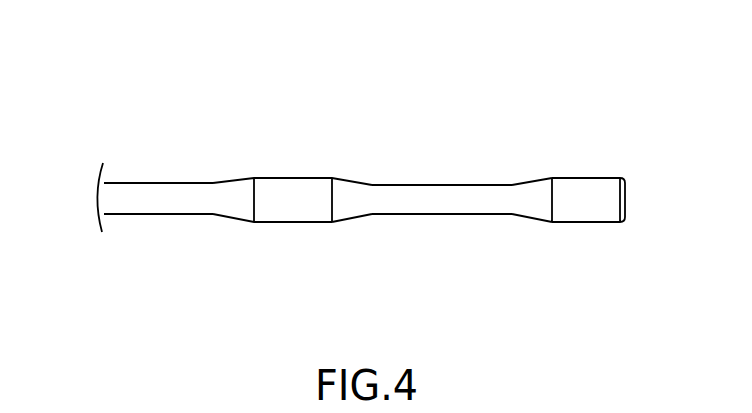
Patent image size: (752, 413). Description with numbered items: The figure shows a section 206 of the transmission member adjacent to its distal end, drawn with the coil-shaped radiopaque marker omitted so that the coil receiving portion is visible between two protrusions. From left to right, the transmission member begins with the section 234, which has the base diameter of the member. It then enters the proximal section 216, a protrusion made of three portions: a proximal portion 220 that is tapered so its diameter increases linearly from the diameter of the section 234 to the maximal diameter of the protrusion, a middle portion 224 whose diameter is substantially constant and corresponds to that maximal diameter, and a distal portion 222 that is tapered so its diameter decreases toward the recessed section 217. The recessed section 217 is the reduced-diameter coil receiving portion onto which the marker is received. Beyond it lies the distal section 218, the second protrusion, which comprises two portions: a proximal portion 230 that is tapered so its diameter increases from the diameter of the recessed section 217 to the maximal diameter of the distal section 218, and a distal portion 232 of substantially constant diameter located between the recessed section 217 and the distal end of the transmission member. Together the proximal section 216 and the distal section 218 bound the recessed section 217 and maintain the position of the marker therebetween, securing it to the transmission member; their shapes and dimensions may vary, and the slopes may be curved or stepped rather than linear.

The guidewire 206 is at (372, 164).
The proximal section 216 is at (307, 147).
The recessed section 217 is at (446, 226).
The distal section 218 is at (599, 162).
The proximal portion 220 is at (204, 228).
The distal portion 222 is at (360, 226).
The middle portion 224 is at (298, 231).
The proximal portion 230 is at (536, 231).
The distal portion 232 is at (631, 204).
The section 234 is at (126, 167).